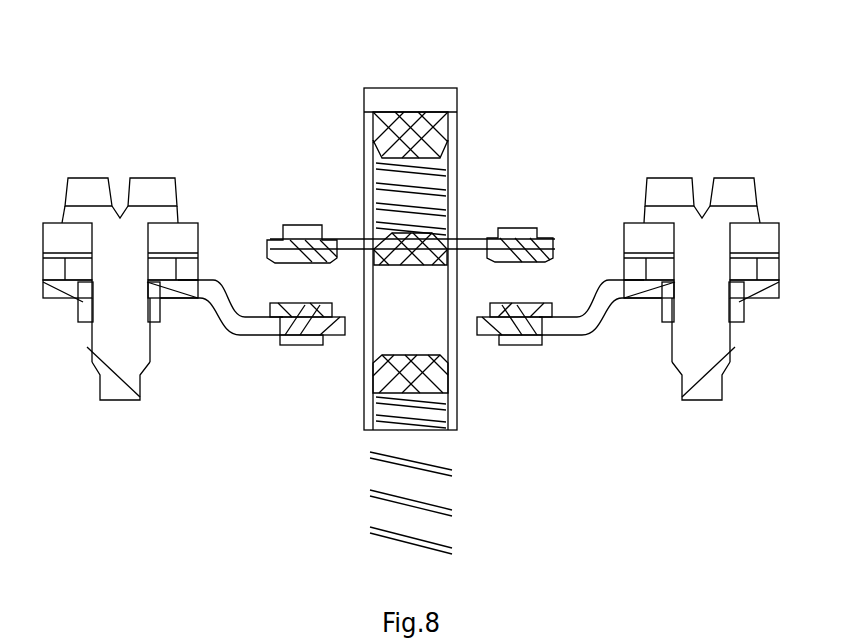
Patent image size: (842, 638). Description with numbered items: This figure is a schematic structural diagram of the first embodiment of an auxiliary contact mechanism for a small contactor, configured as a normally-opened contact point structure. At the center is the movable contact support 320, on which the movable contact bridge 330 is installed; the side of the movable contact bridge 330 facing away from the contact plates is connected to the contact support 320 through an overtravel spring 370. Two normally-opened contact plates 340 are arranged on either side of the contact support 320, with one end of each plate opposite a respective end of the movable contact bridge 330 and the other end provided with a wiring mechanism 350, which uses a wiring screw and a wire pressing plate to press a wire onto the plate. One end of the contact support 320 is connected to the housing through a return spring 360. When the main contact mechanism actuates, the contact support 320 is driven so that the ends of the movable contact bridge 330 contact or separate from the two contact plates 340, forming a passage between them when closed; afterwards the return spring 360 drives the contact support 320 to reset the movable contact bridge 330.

The movable contact support 320 is at (387, 98).
The movable contact bridge 330 is at (337, 238).
The normally-opened contact plate 340 is at (220, 300).
The wiring mechanism 350 is at (117, 347).
The return spring 360 is at (410, 498).
The overtravel spring 370 is at (432, 150).